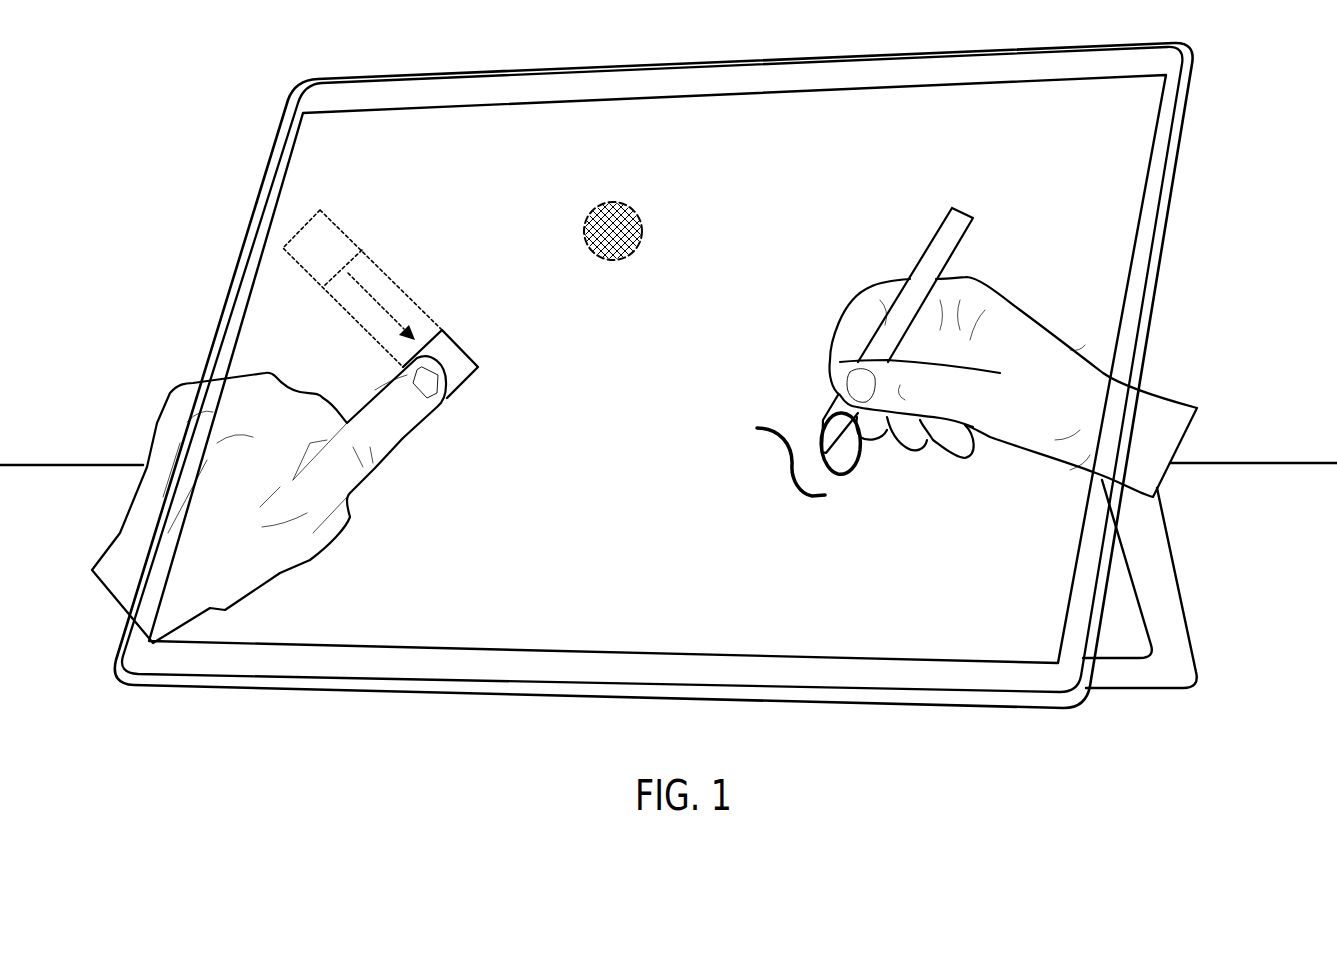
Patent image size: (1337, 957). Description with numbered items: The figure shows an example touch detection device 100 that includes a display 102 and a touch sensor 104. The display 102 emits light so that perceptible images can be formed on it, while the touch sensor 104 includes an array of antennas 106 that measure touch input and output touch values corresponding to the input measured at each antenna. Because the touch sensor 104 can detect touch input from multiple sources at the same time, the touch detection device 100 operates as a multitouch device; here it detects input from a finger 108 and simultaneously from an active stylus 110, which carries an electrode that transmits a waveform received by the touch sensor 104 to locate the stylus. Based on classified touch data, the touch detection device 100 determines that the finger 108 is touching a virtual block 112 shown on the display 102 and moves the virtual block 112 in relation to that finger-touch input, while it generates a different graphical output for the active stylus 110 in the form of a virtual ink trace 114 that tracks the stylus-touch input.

The touch detection device 100 is at (363, 82).
The display 102 is at (703, 93).
The touch sensor 104 is at (630, 208).
The array of antennas 106 is at (610, 220).
The finger 108 is at (405, 430).
The active stylus 110 is at (942, 250).
The virtual block 112 is at (458, 350).
The virtual ink trace 114 is at (757, 429).